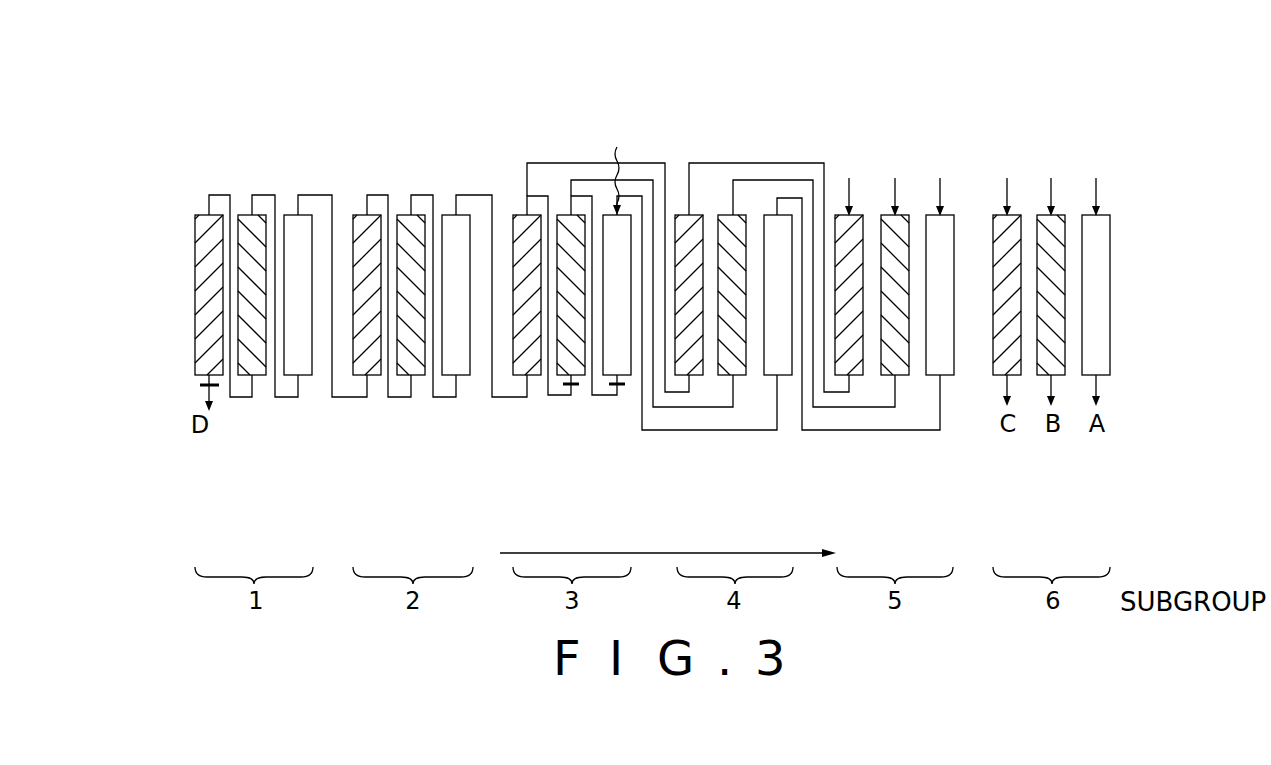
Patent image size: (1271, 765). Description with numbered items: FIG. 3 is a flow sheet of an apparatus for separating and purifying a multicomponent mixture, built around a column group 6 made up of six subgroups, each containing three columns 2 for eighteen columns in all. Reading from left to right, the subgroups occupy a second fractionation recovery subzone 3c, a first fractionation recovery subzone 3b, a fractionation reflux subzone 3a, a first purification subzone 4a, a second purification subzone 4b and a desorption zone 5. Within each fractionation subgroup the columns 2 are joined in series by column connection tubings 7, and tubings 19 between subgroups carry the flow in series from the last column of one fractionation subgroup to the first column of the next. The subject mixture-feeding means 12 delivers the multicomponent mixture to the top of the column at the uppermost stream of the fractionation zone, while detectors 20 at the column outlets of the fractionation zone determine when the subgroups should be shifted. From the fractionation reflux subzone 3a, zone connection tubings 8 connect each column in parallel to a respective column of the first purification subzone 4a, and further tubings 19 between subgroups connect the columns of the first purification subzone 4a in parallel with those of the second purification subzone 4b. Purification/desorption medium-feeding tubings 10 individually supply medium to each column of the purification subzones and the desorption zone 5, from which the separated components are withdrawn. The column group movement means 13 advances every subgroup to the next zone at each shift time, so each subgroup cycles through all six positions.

The column 2 is at (207, 304).
The column group 6 is at (1163, 195).
The column connection tubings 7 is at (243, 397).
The zone connection tubings 8 is at (675, 392).
The purification/desorption medium-feeding tubings 10 is at (896, 186).
The subject mixture-feeding means 12 is at (617, 150).
The column group movement means 13 is at (698, 553).
The tubings between subgroups 19 is at (348, 397).
The detectors 20 is at (580, 388).
The fractionation reflux subzone 3a is at (513, 77).
The first fractionation recovery subzone 3b is at (353, 77).
The second fractionation recovery subzone 3c is at (195, 77).
The first purification subzone 4a is at (677, 77).
The second purification subzone 4b is at (837, 77).
The desorption zone 5 is at (993, 77).